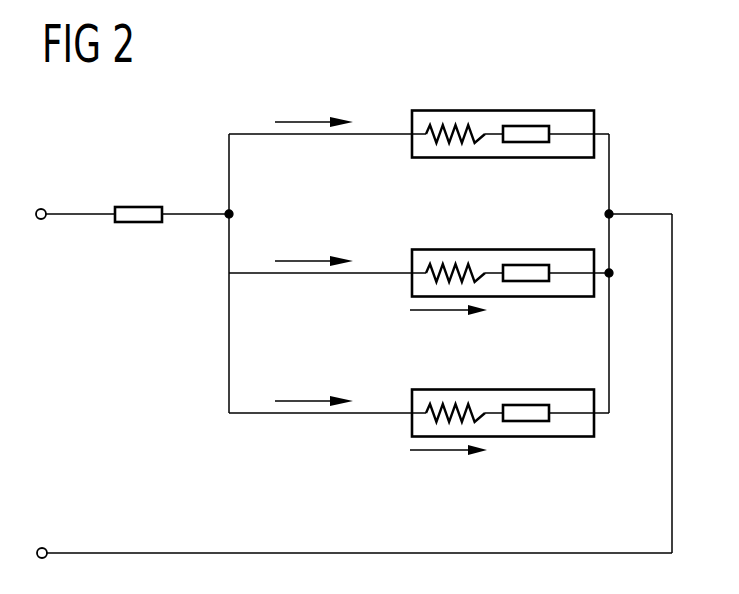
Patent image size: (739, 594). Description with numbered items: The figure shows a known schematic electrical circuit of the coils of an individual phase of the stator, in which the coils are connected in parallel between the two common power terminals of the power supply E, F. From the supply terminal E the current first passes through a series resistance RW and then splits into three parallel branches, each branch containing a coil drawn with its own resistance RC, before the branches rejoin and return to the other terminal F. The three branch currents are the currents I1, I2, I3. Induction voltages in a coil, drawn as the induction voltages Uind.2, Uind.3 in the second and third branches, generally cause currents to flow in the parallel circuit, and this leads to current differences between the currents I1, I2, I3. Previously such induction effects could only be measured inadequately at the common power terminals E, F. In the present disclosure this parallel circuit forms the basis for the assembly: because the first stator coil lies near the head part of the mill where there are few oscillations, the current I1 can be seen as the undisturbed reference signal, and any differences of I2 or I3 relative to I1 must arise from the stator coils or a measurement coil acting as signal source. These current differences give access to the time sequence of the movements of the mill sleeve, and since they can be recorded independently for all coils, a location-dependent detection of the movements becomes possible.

The power supply terminal E is at (44, 207).
The power supply terminal F is at (44, 547).
The winding resistance RW is at (139, 206).
The coil resistance RC is at (527, 404).
The current I1 is at (320, 107).
The current I2 is at (320, 246).
The current I3 is at (320, 386).
The induction voltage Uind.2 is at (448, 331).
The induction voltage Uind.3 is at (448, 471).